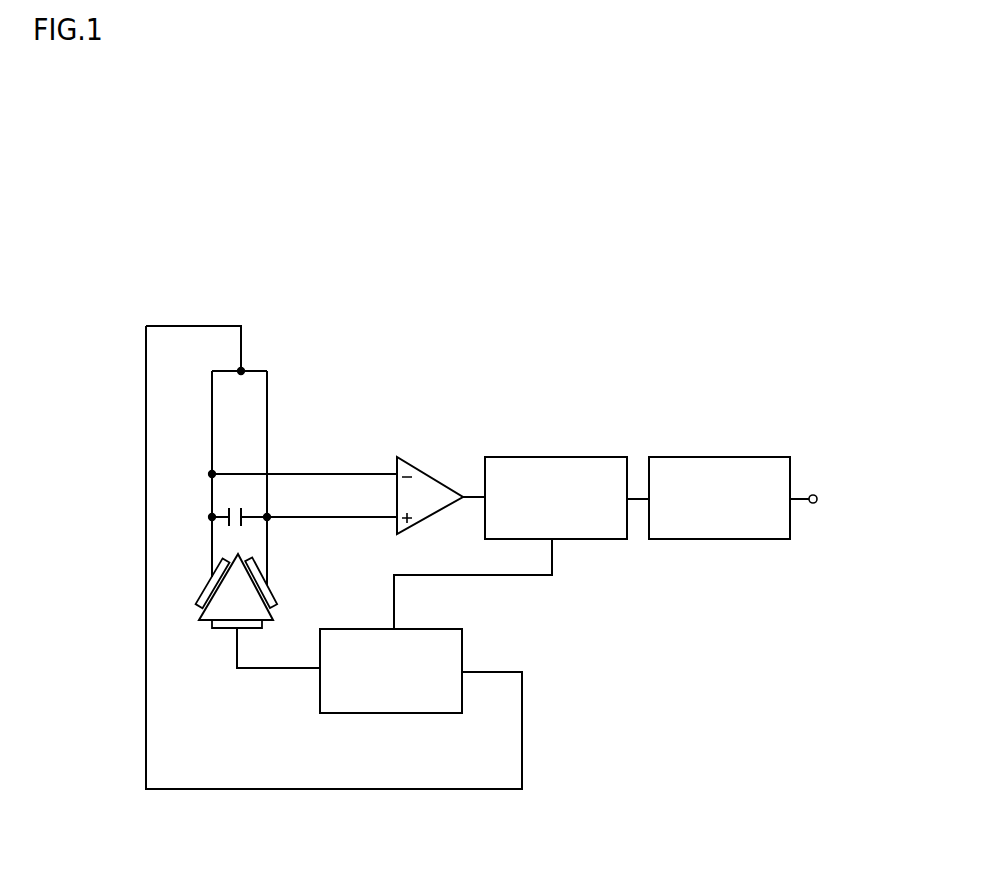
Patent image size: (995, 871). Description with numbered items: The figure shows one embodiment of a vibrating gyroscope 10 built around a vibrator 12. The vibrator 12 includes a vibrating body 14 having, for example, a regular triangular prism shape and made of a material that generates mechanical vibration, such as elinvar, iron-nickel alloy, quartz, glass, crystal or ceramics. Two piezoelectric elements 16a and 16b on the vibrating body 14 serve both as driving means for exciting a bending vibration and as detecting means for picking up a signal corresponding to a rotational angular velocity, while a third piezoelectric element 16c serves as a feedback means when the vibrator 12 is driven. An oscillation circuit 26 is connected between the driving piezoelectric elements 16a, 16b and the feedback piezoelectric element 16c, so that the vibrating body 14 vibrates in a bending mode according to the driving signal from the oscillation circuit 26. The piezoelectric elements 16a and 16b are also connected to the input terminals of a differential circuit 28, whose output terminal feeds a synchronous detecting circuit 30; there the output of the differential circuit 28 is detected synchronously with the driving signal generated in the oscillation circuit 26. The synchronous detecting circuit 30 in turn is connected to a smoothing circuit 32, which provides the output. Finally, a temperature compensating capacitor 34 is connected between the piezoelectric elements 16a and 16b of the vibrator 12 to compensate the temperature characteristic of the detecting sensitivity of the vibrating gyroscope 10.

The vibrating gyroscope 10 is at (184, 150).
The vibrator 12 is at (273, 587).
The vibrating body 14 is at (215, 607).
The piezoelectric element 16a is at (207, 597).
The piezoelectric element 16b is at (276, 597).
The piezoelectric element 16c is at (224, 628).
The oscillation circuit 26 is at (391, 715).
The differential circuit 28 is at (426, 487).
The synchronous detecting circuit 30 is at (550, 466).
The smoothing circuit 32 is at (712, 466).
The temperature compensating capacitor 34 is at (228, 512).